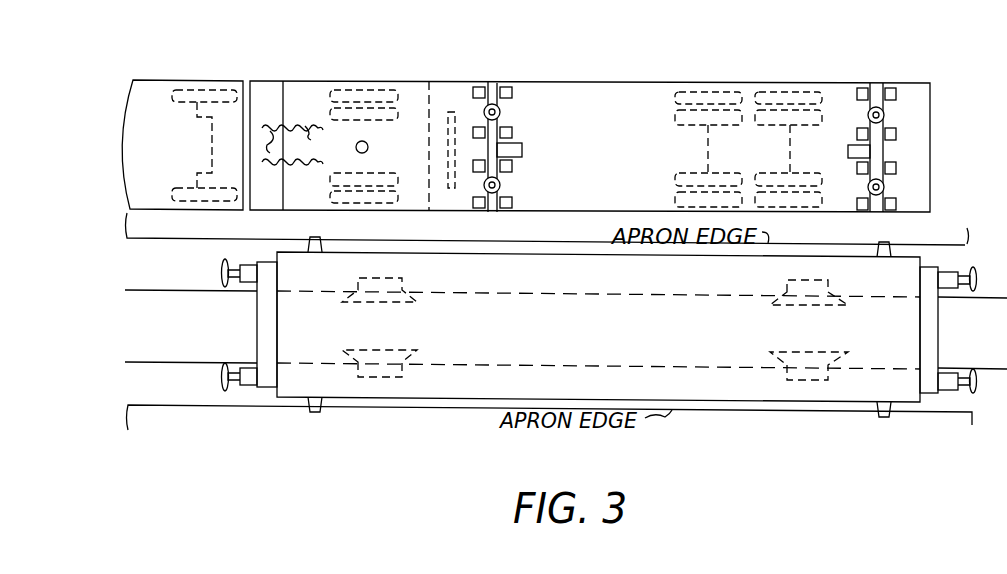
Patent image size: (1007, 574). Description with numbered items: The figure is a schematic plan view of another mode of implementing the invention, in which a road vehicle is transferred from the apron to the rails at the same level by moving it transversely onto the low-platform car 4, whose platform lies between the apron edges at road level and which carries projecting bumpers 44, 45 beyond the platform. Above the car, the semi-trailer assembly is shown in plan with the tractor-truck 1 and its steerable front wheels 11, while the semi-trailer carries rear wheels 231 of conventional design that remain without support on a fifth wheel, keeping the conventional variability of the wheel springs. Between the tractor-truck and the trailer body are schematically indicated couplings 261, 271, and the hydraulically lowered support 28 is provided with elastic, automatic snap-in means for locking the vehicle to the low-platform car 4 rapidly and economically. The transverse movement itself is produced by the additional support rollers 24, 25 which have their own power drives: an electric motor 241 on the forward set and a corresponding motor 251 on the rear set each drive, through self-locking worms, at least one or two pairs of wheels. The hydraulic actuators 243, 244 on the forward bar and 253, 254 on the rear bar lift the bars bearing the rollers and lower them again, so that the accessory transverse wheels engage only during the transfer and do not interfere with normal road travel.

The tractor-truck 1 is at (155, 95).
The front wheels 11 is at (215, 95).
The wavy connector 261 is at (278, 127).
The wavy connector 271 is at (313, 125).
The hydraulically lowered support 28 is at (449, 115).
The additional support roller 24 is at (525, 136).
The hydraulic actuator 243 is at (497, 83).
The hydraulic actuator 244 is at (492, 193).
The electric motor 241 is at (522, 141).
The rear wheels 231 is at (765, 95).
The additional support roller 25 is at (881, 141).
The hydraulic actuator 253 is at (893, 112).
The hydraulic actuator 254 is at (890, 192).
The coupler arm 251 is at (848, 158).
The low-platform car 4 is at (445, 382).
The bumper 44 is at (321, 412).
The right guide stub 45 is at (876, 418).